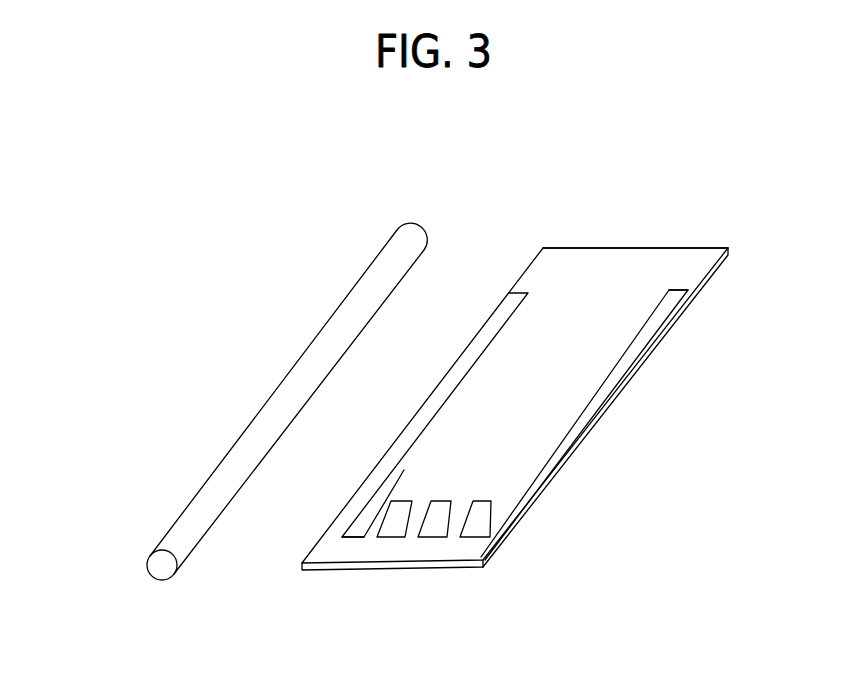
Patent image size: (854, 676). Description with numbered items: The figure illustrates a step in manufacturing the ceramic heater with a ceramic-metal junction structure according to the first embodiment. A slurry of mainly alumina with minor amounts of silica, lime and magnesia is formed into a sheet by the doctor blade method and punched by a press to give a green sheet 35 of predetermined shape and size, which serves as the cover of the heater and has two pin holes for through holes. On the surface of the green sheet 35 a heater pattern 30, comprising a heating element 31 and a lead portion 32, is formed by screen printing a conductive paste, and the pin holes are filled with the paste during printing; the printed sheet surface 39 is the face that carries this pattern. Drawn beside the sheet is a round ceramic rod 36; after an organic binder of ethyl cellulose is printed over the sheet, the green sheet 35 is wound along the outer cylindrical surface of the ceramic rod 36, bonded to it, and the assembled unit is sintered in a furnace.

The heater pattern 30 is at (740, 445).
The heating element 31 is at (517, 525).
The lead portion 32 is at (573, 423).
The green sheet 35 is at (545, 212).
The ceramic rod 36 is at (158, 563).
The substrate plate 39 is at (578, 293).